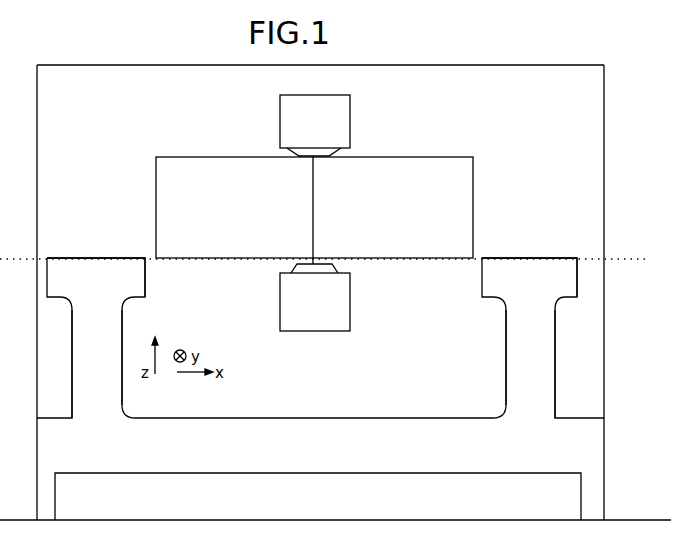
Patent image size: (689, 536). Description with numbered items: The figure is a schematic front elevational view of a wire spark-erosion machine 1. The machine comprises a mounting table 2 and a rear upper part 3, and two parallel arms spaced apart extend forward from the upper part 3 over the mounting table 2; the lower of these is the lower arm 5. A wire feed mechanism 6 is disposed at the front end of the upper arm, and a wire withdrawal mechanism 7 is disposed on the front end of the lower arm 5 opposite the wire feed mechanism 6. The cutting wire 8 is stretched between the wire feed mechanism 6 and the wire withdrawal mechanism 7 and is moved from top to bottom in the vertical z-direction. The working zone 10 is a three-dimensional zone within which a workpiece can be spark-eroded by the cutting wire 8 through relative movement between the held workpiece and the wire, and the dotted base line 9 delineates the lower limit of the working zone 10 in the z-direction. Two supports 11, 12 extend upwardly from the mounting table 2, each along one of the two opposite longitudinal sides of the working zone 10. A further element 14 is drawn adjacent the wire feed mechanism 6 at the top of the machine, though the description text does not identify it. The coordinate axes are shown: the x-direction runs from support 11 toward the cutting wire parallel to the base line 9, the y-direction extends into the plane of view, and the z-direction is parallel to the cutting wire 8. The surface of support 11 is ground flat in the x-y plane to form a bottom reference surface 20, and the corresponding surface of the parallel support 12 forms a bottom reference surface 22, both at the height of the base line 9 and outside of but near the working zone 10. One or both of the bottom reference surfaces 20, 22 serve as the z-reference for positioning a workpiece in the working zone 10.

The wire spark-erosion machine 1 is at (603, 153).
The mounting table 2 is at (598, 446).
The rear upper part 3 is at (598, 90).
The lower arm 5 is at (350, 316).
The wire feed mechanism 6 is at (296, 150).
The wire withdrawal mechanism 7 is at (343, 268).
The cutting wire 8 is at (313, 216).
The base line 9 is at (628, 258).
The working zone 10 is at (356, 157).
The support 11 is at (82, 356).
The support 12 is at (552, 368).
The upper drive unit 14 is at (350, 113).
The bottom reference surface 20 is at (77, 258).
The bottom reference surface 22 is at (557, 258).